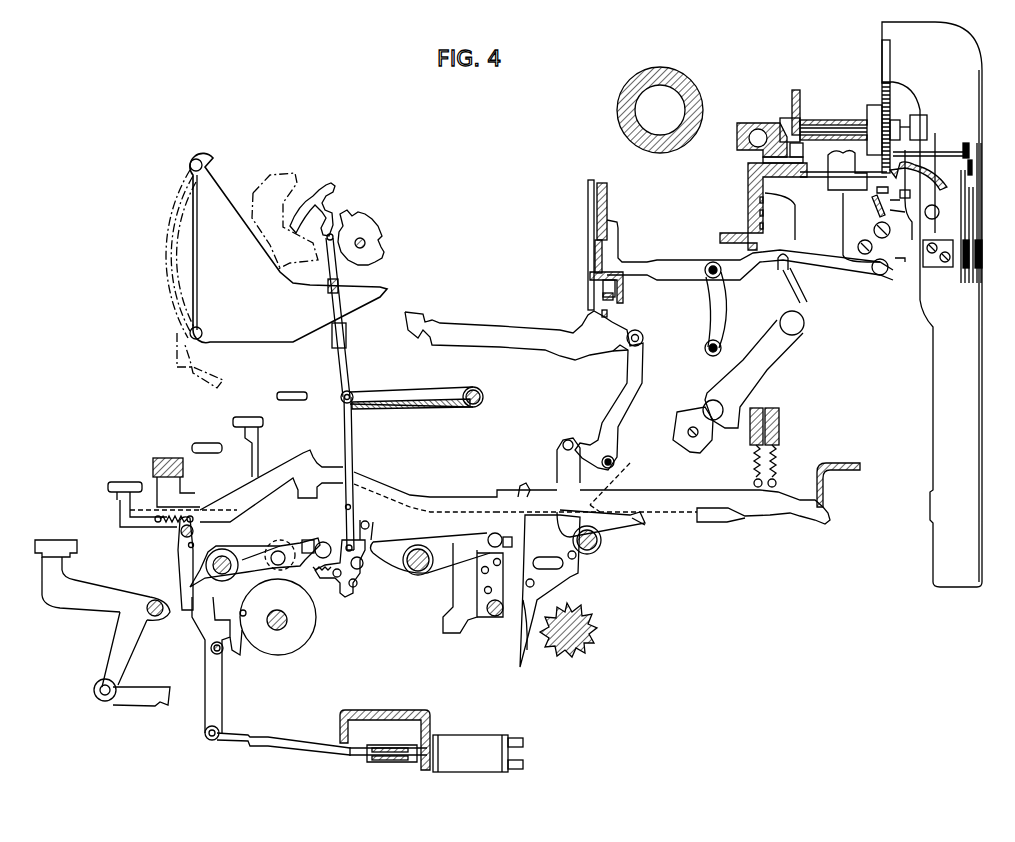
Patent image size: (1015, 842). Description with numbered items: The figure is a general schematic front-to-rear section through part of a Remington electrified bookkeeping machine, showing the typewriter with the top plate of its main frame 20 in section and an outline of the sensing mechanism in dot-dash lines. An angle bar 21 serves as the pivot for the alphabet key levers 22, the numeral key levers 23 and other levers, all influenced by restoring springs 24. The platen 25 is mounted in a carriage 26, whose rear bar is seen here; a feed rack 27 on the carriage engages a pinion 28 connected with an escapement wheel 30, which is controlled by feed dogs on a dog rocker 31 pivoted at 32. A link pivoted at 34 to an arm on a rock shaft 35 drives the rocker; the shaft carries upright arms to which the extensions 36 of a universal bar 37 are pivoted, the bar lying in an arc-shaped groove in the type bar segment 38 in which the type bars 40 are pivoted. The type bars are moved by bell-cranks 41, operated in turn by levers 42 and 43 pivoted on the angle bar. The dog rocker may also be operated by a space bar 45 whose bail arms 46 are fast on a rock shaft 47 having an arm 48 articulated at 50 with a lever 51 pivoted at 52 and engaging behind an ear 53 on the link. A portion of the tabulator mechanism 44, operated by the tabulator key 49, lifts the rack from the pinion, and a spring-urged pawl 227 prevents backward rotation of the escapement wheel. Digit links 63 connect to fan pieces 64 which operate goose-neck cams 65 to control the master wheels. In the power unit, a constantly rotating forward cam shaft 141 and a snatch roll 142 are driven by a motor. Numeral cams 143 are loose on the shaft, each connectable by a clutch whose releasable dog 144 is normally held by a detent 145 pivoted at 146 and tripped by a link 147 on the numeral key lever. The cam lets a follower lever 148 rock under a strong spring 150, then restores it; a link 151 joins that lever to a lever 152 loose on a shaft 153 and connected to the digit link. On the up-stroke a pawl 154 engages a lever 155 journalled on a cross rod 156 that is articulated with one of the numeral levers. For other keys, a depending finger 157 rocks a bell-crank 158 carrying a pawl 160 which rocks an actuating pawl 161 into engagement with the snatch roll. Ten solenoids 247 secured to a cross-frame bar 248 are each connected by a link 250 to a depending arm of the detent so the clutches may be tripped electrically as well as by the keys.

The main frame 20 is at (750, 177).
The angle bar 21 is at (830, 463).
The alphabet key lever 22 is at (258, 443).
The numeral key lever 23 is at (135, 480).
The restoring spring 24 is at (783, 447).
The platen 25 is at (687, 70).
The carriage 26 is at (753, 123).
The feed rack 27 is at (798, 87).
The pinion 28 is at (803, 117).
The escapement wheel 30 is at (882, 90).
The dog rocker 31 is at (890, 190).
The pivot 32 is at (875, 230).
The pivot 34 is at (713, 260).
The rock shaft 35 is at (705, 348).
The extension 36 is at (663, 267).
The universal bar 37 is at (623, 287).
The type bar segment 38 is at (607, 198).
The type bar 40 is at (513, 332).
The bell-crank 41 is at (607, 413).
The lever 42 is at (520, 498).
The lever 43 is at (523, 483).
The tabulator mechanism 44 is at (943, 375).
The space bar 45 is at (167, 457).
The bail arm 46 is at (190, 497).
The rock shaft 47 is at (585, 550).
The arm 48 is at (698, 447).
The tabulator key 49 is at (63, 538).
The articulation 50 is at (710, 403).
The lever 51 is at (760, 367).
The pivot 52 is at (797, 320).
The ear 53 is at (803, 280).
The digit link 63 is at (345, 350).
The fan piece 64 is at (368, 228).
The goose-neck cam 65 is at (327, 183).
The forward cam shaft 141 is at (283, 610).
The snatch roll 142 is at (593, 632).
The numeral cam 143 is at (300, 637).
The releasable dog 144 is at (240, 645).
The detent 145 is at (203, 637).
The pivot 146 is at (213, 650).
The link 147 is at (180, 560).
The follower lever 148 is at (300, 543).
The spring 150 is at (258, 543).
The link 151 is at (352, 458).
The lever 152 is at (387, 407).
The shaft 153 is at (485, 395).
The pawl 154 is at (374, 522).
The lever 155 is at (398, 558).
The cross rod 156 is at (423, 570).
The depending finger 157 is at (453, 590).
The bell-crank 158 is at (475, 620).
The pawl 160 is at (530, 557).
The actuating pawl 161 is at (530, 610).
The pawl 227 is at (890, 167).
The solenoid 247 is at (477, 740).
The cross-frame bar 248 is at (413, 710).
The link 250 is at (317, 750).